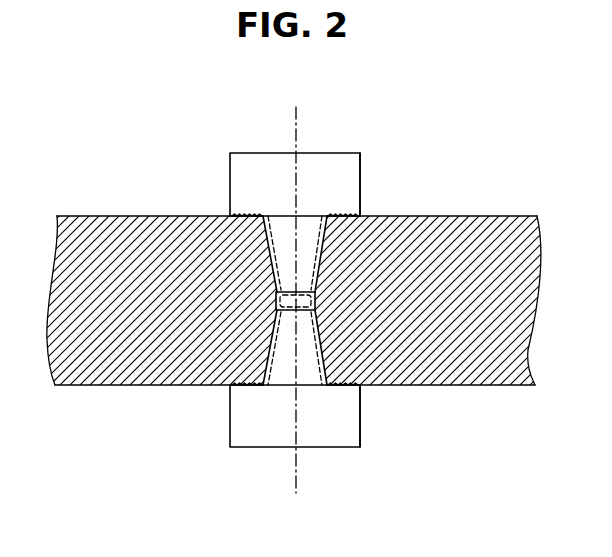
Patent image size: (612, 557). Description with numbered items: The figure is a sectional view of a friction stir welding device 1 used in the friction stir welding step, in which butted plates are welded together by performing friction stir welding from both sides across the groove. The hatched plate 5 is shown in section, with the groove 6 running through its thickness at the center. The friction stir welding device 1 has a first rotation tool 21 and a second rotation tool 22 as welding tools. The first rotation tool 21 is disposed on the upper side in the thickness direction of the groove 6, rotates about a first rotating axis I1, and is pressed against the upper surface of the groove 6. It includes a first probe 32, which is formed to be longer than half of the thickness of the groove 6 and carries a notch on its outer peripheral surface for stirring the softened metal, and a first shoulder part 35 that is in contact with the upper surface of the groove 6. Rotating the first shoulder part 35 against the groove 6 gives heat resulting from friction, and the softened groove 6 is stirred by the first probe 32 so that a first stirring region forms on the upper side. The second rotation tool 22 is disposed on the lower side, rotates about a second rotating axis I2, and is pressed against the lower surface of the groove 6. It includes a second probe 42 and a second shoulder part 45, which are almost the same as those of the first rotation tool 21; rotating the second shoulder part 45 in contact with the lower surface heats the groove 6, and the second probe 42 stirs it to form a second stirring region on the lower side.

The friction stir welding device 1 is at (178, 110).
The plate 5 is at (100, 216).
The groove 6 is at (300, 257).
The first rotation tool 21 is at (248, 153).
The second rotation tool 22 is at (237, 447).
The first probe 32 is at (268, 265).
The first shoulder part 35 is at (362, 178).
The second probe 42 is at (321, 342).
The second shoulder part 45 is at (348, 447).
The first rotating axis I1 is at (296, 125).
The second rotating axis I2 is at (296, 471).